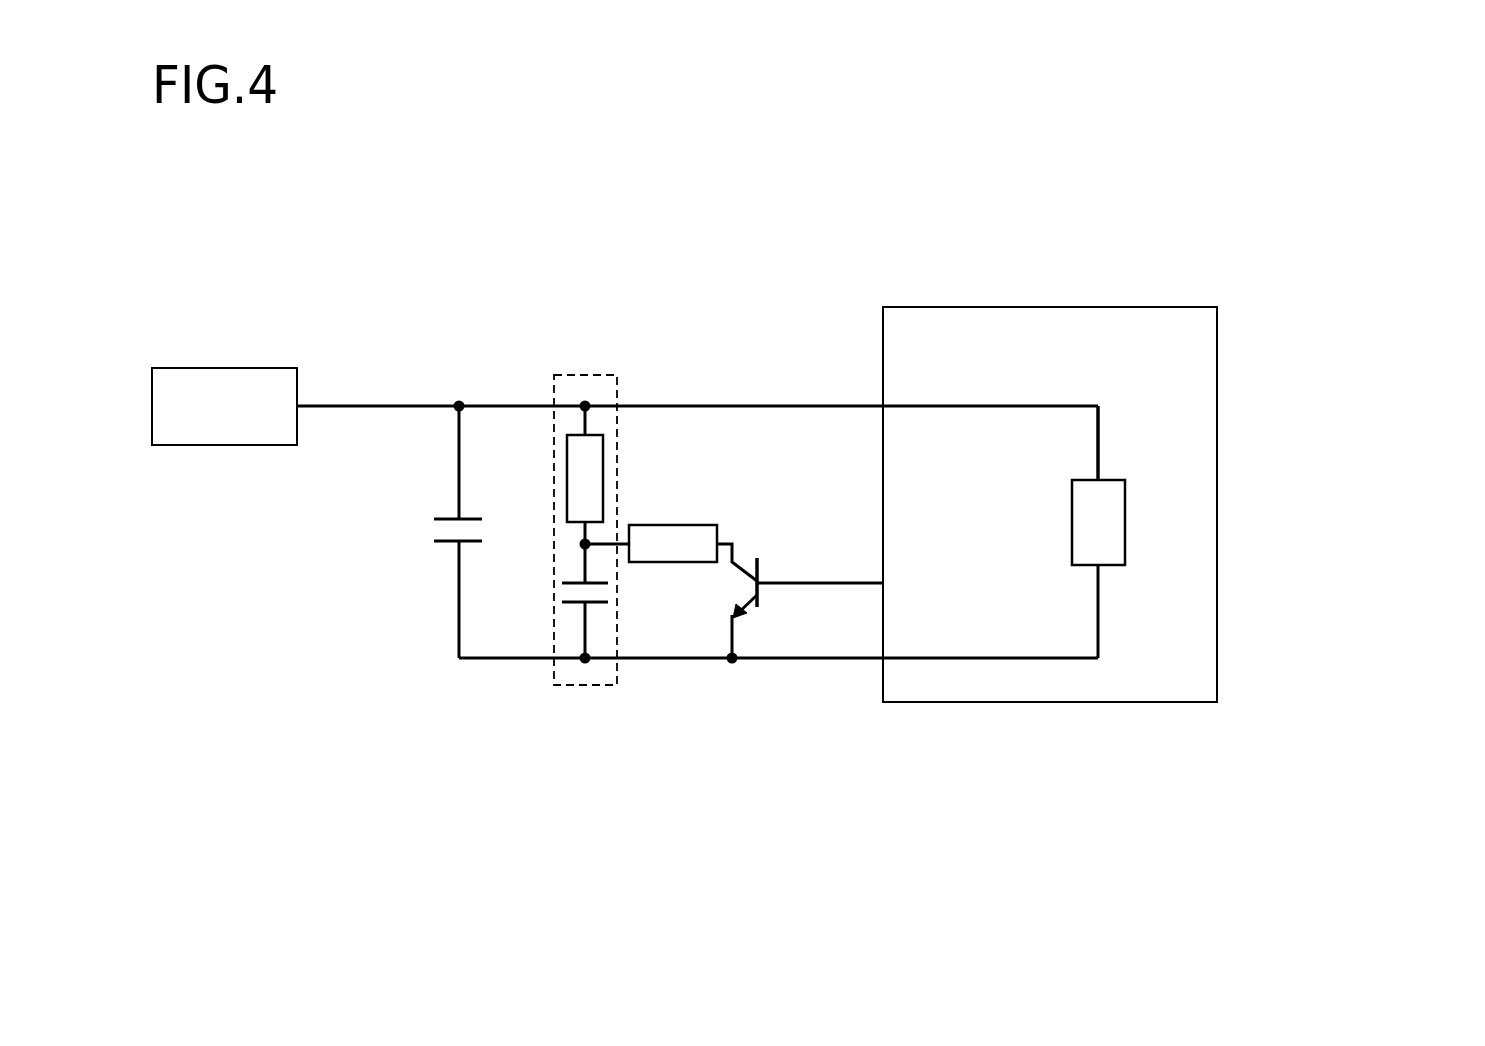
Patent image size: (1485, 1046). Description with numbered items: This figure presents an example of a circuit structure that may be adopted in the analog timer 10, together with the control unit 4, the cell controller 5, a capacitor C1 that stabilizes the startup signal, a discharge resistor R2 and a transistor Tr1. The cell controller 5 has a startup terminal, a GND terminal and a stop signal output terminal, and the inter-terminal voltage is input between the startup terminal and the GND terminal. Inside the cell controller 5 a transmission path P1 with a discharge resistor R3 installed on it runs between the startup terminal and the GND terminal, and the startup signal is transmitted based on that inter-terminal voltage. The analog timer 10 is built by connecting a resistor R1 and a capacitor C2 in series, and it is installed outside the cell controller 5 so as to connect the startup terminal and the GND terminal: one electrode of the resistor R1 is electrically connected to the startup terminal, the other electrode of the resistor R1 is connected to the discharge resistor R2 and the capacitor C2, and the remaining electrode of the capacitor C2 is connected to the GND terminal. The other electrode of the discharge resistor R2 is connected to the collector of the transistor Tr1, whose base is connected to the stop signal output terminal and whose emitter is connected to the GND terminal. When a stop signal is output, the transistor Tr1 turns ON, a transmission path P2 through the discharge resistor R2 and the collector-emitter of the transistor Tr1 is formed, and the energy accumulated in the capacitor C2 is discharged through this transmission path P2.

The control unit 4 is at (224, 406).
The analog timer 10 is at (612, 327).
The cell controller 5 is at (1050, 504).
The capacitor C1 is at (470, 532).
The capacitor C2 is at (587, 601).
The resistor R1 is at (585, 475).
The discharge resistor R2 is at (651, 543).
The discharge resistor R3 is at (1098, 532).
The transistor Tr1 is at (807, 603).
The transmission path P1 is at (1099, 428).
The transmission path P2 is at (725, 542).